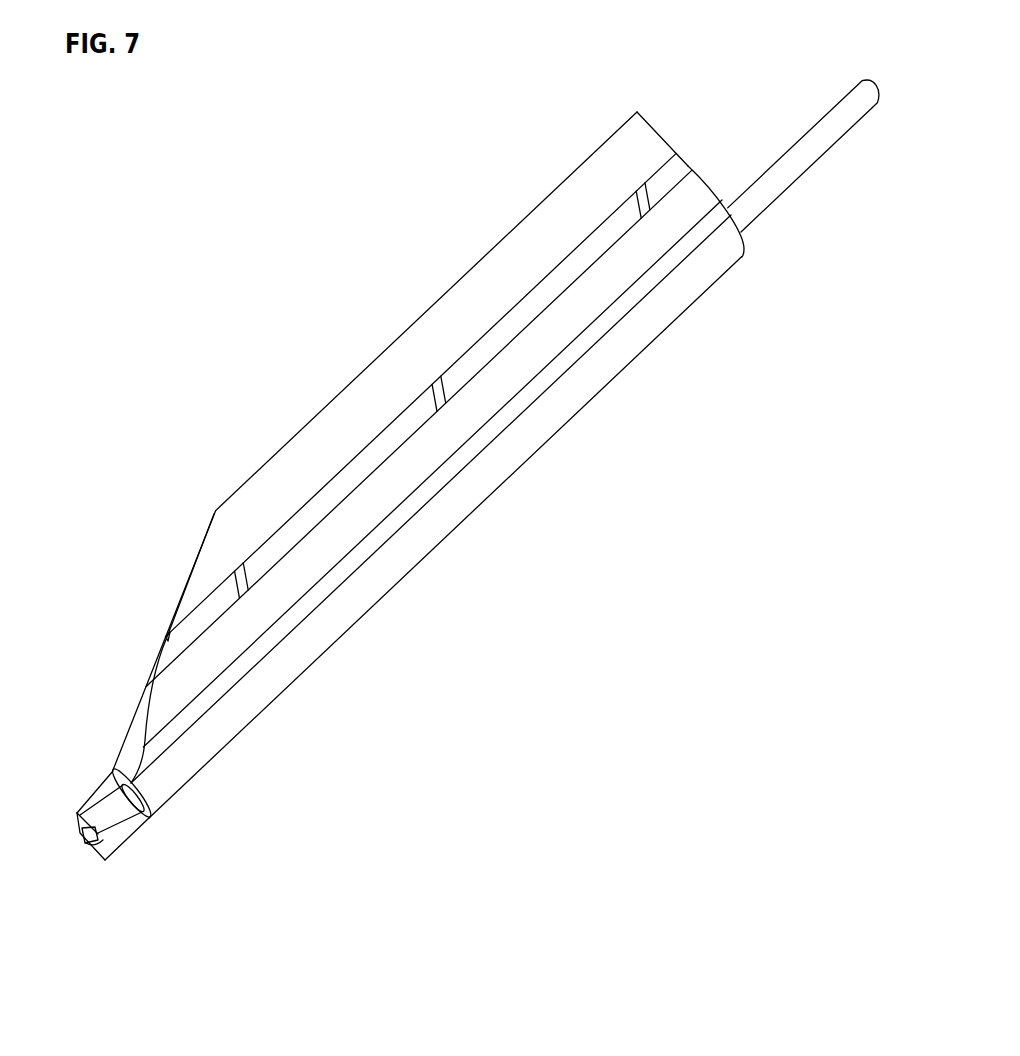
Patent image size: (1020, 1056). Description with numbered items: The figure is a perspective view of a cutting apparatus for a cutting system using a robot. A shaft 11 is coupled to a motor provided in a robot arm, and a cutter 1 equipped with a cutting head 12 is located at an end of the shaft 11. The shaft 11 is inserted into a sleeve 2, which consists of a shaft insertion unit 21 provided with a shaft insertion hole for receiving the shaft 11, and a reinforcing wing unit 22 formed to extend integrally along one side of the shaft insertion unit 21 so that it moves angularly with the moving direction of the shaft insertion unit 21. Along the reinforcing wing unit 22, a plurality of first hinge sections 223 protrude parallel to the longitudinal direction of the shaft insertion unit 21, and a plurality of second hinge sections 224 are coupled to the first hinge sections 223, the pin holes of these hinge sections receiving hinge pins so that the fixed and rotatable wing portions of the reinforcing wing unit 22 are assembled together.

The cutter 1 is at (99, 784).
The shaft 11 is at (798, 168).
The cutting head 12 is at (122, 831).
The sleeve 2 is at (578, 414).
The shaft insertion unit 21 is at (480, 485).
The reinforcing wing unit 22 is at (692, 182).
The first hinge section 223 is at (657, 180).
The second hinge sections 224 is at (632, 203).